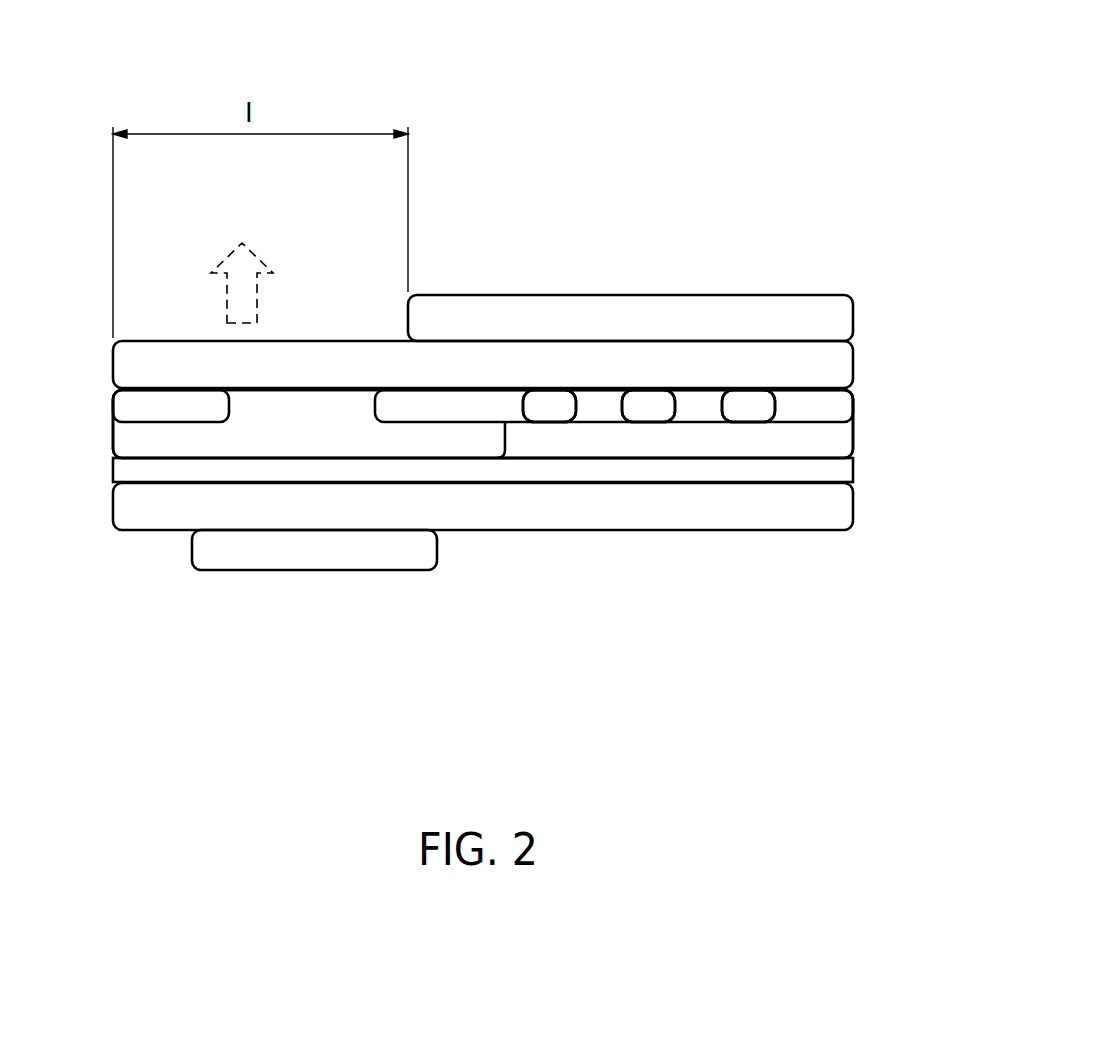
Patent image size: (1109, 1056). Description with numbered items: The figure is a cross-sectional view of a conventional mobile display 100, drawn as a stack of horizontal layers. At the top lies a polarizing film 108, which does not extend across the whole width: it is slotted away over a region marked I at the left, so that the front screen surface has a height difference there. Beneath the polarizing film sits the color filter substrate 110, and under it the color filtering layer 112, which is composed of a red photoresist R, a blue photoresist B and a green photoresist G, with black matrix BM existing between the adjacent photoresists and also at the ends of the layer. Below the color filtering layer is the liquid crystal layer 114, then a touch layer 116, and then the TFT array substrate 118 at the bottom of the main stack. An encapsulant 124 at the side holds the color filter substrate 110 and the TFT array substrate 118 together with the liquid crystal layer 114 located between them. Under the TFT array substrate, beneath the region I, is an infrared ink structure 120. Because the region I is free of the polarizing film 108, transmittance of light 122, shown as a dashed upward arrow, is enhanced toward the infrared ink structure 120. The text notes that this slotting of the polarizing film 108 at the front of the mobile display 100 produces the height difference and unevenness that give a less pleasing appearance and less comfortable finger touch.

The mobile display 100 is at (804, 84).
The polarizing film 108 is at (558, 312).
The color filter substrate 110 is at (845, 365).
The color filtering layer 112 is at (481, 515).
The liquid crystal layer 114 is at (838, 447).
The touch layer 116 is at (838, 482).
The TFT array substrate 118 is at (835, 520).
The infrared ink structure 120 is at (200, 536).
The light 122 is at (247, 263).
The encapsulant 124 is at (125, 447).
The black matrix BM is at (120, 402).
The blue photoresist B is at (536, 410).
The red photoresist R is at (646, 410).
The green photoresist G is at (747, 410).